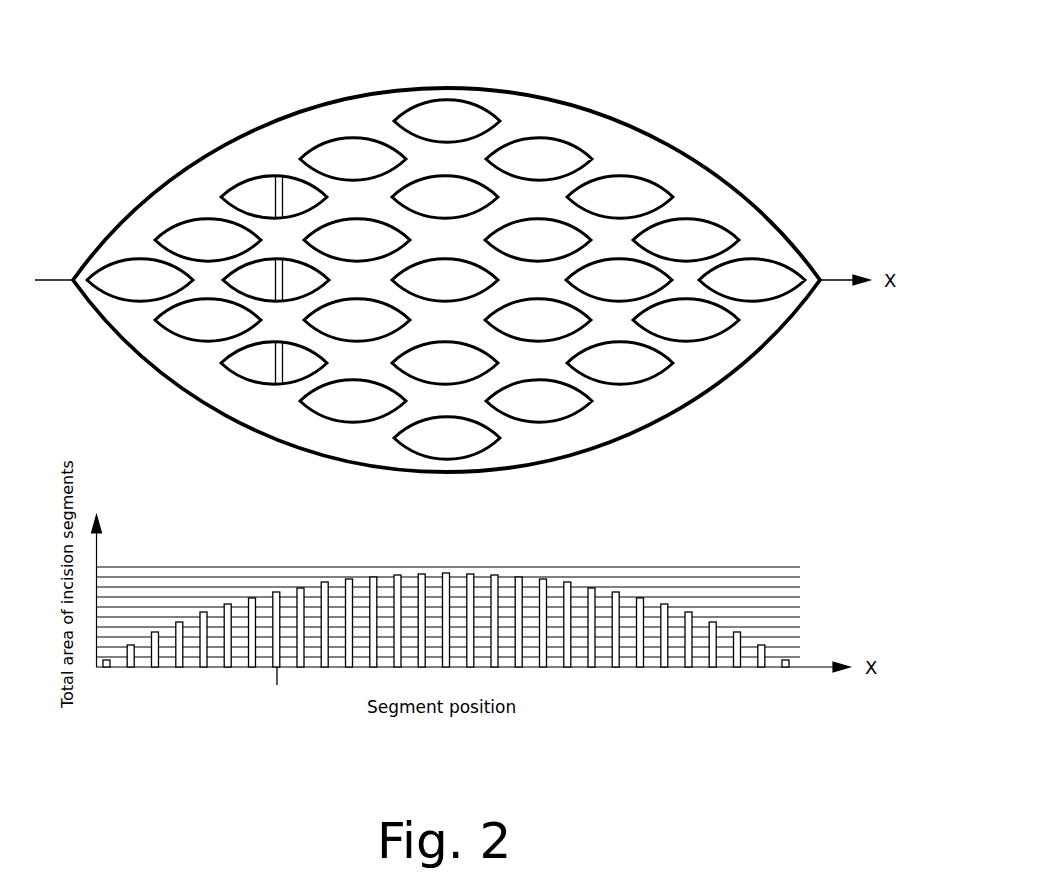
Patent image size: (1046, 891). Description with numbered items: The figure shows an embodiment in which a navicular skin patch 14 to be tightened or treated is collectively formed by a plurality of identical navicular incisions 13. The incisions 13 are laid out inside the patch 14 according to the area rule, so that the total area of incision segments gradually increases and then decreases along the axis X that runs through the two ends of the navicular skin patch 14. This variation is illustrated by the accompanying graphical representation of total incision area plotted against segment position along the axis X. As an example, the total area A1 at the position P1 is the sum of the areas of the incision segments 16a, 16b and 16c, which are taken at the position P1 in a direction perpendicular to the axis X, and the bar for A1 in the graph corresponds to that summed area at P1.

The navicular incisions 13 is at (545, 153).
The navicular skin patch 14 is at (678, 148).
The incision segment 16a is at (278, 194).
The incision segment 16b is at (273, 281).
The incision segment 16c is at (275, 372).
The total area A1 is at (277, 592).
The position P1 is at (277, 687).